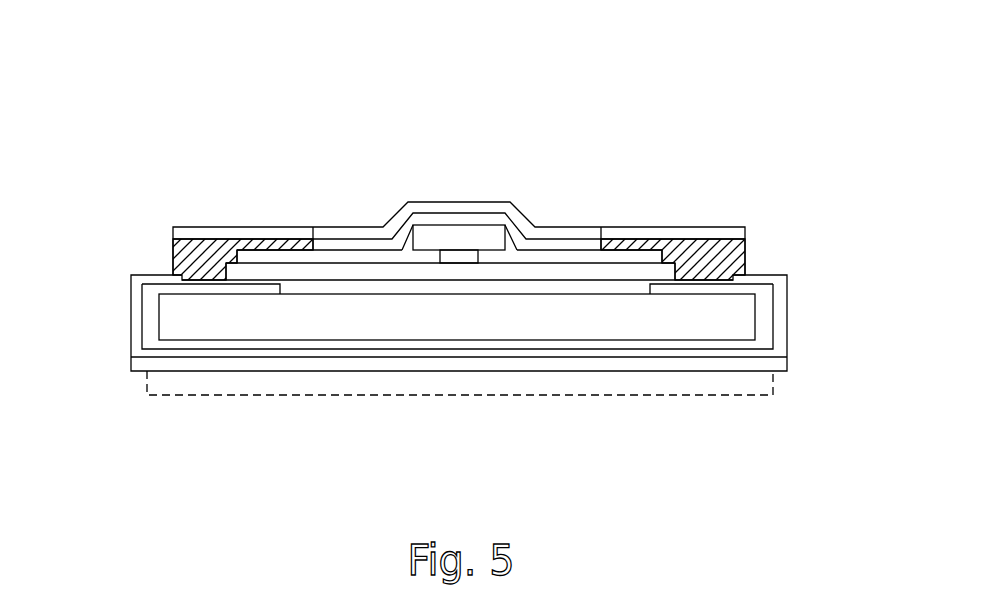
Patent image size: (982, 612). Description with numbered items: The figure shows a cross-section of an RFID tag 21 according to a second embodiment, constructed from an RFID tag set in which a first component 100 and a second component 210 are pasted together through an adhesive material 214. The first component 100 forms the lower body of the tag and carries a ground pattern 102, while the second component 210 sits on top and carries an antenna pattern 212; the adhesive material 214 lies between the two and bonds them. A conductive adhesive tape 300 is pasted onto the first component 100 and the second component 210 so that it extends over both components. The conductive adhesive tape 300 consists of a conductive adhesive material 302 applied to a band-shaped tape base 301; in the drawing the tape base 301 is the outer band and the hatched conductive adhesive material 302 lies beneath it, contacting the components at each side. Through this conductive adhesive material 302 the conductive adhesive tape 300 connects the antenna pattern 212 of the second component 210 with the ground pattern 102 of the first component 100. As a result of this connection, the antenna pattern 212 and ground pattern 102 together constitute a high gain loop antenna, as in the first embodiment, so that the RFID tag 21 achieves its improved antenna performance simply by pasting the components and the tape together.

The RFID tag 21 is at (514, 93).
The first component 100 is at (797, 273).
The ground pattern 102 is at (152, 326).
The second component 210 is at (555, 203).
The antenna pattern 212 is at (277, 258).
The adhesive material 214 is at (627, 285).
The conductive adhesive tape 300 is at (77, 200).
The tape base 301 is at (185, 233).
The conductive adhesive material 302 is at (173, 258).